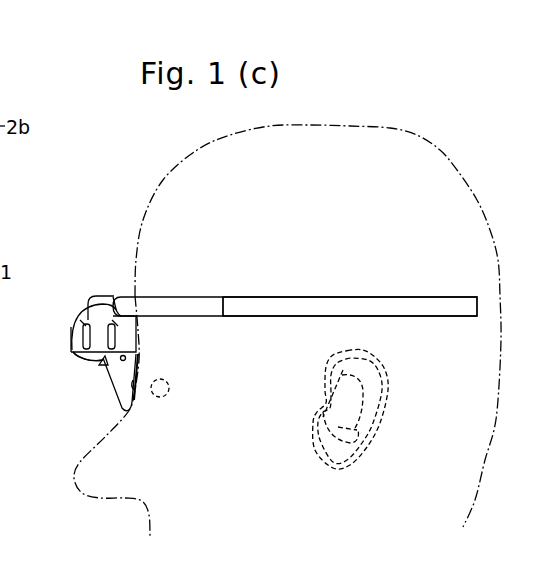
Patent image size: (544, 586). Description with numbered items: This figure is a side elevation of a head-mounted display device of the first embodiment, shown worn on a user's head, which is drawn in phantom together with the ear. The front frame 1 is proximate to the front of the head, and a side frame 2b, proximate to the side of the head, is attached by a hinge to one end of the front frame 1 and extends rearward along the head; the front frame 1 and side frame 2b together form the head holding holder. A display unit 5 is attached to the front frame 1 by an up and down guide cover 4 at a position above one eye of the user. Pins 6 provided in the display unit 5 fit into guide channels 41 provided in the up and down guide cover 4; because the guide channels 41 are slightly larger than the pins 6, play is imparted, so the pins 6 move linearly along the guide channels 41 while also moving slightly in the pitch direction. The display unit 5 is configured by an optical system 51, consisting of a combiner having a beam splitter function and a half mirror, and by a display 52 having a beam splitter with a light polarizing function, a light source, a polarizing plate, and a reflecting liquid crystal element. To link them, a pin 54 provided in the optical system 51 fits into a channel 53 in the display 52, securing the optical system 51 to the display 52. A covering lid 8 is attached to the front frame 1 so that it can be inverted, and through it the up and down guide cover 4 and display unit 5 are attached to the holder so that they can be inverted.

The front frame 1 is at (177, 300).
The side frame 2b is at (307, 299).
The up and down guide cover 4 is at (84, 311).
The display unit 5 is at (64, 381).
The pin 6 is at (86, 324).
The covering lid 8 is at (124, 302).
The guide channel 41 is at (82, 337).
The optical system 51 is at (122, 392).
The display 52 is at (80, 358).
The channel 53 is at (102, 365).
The pin 54 is at (136, 356).